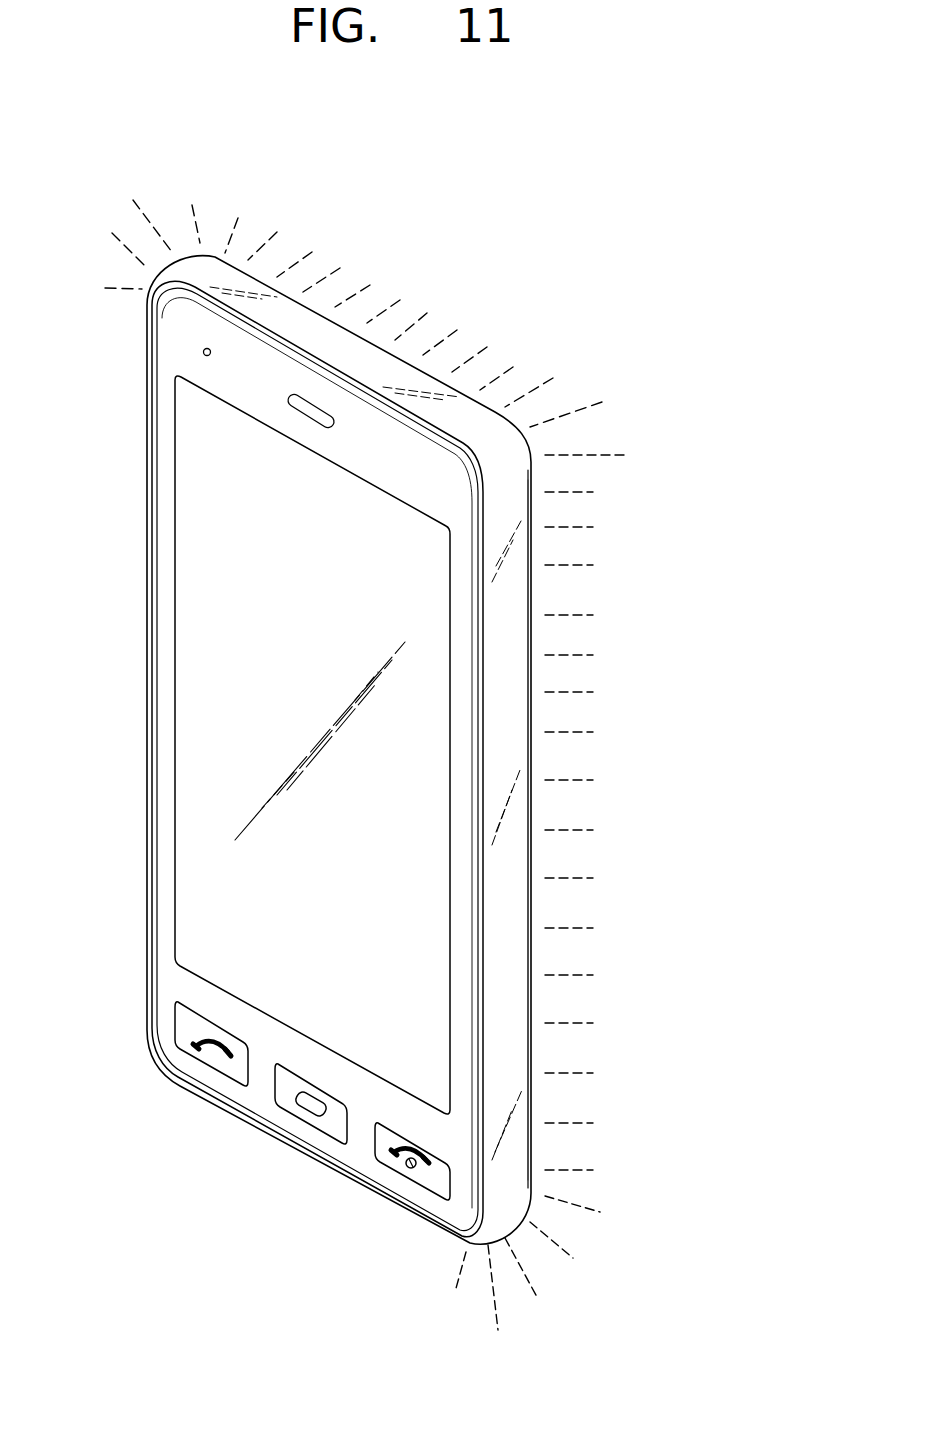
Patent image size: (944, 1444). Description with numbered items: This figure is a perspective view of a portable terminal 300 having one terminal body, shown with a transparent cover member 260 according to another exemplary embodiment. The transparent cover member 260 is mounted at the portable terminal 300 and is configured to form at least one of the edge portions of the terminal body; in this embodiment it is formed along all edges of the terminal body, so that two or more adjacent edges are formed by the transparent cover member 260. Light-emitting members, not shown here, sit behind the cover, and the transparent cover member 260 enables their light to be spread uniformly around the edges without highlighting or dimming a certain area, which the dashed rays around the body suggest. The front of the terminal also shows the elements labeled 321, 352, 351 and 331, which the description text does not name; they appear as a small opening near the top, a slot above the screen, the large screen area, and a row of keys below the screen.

The portable terminal 300 is at (545, 320).
The transparent cover member 260 is at (517, 678).
The camera 321 is at (203, 352).
The audio output module 352 is at (297, 413).
The display unit 351 is at (187, 695).
The user input unit 331 is at (180, 1042).